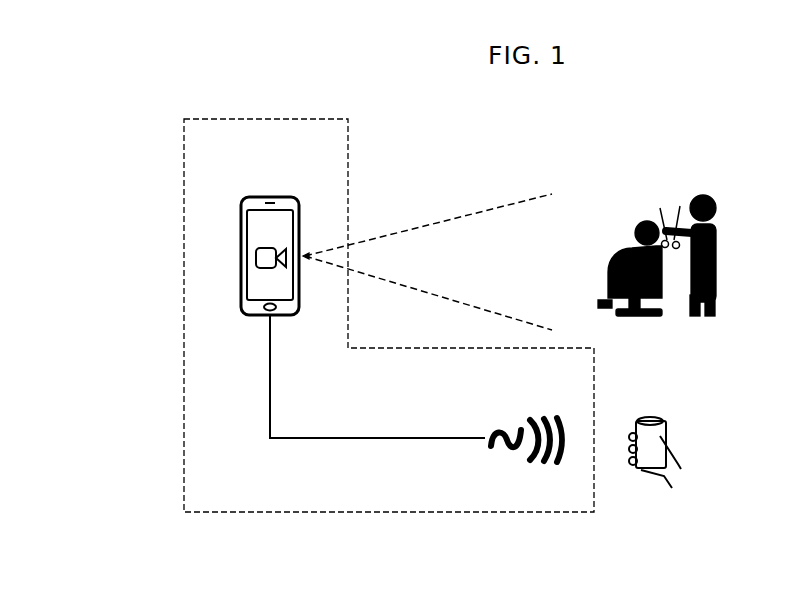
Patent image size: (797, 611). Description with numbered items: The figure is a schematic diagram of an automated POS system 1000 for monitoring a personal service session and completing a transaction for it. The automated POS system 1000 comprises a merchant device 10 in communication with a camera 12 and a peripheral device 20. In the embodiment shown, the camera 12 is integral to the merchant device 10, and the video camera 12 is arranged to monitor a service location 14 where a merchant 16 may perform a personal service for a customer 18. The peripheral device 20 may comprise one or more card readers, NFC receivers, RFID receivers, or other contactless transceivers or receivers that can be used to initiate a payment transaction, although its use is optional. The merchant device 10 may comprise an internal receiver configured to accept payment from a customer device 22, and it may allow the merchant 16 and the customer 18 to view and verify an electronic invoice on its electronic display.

The automated POS system 1000 is at (184, 316).
The merchant device 10 is at (270, 196).
The camera 12 is at (240, 258).
The service location 14 is at (626, 170).
The merchant 16 is at (723, 238).
The customer 18 is at (627, 317).
The peripheral device 20 is at (526, 467).
The customer device 22 is at (655, 462).